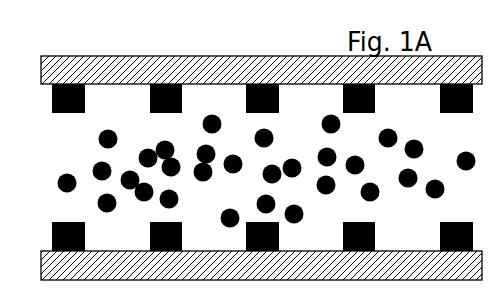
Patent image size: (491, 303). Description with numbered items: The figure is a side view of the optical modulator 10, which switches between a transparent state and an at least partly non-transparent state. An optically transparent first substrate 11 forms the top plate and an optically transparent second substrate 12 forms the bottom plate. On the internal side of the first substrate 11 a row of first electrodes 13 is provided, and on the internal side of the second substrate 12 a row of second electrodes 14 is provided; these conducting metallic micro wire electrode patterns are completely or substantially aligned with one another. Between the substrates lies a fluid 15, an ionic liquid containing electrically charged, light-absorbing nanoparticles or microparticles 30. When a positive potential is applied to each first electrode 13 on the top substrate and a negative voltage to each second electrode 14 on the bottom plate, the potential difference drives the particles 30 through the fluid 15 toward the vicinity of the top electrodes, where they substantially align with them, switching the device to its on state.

The optical modulator 10 is at (444, 17).
The first substrate 11 is at (261, 70).
The second substrate 12 is at (261, 266).
The first electrode 13 is at (68, 83).
The second electrode 14 is at (69, 252).
The fluid 15 is at (413, 223).
The nanoparticle/microparticle 30 is at (58, 172).